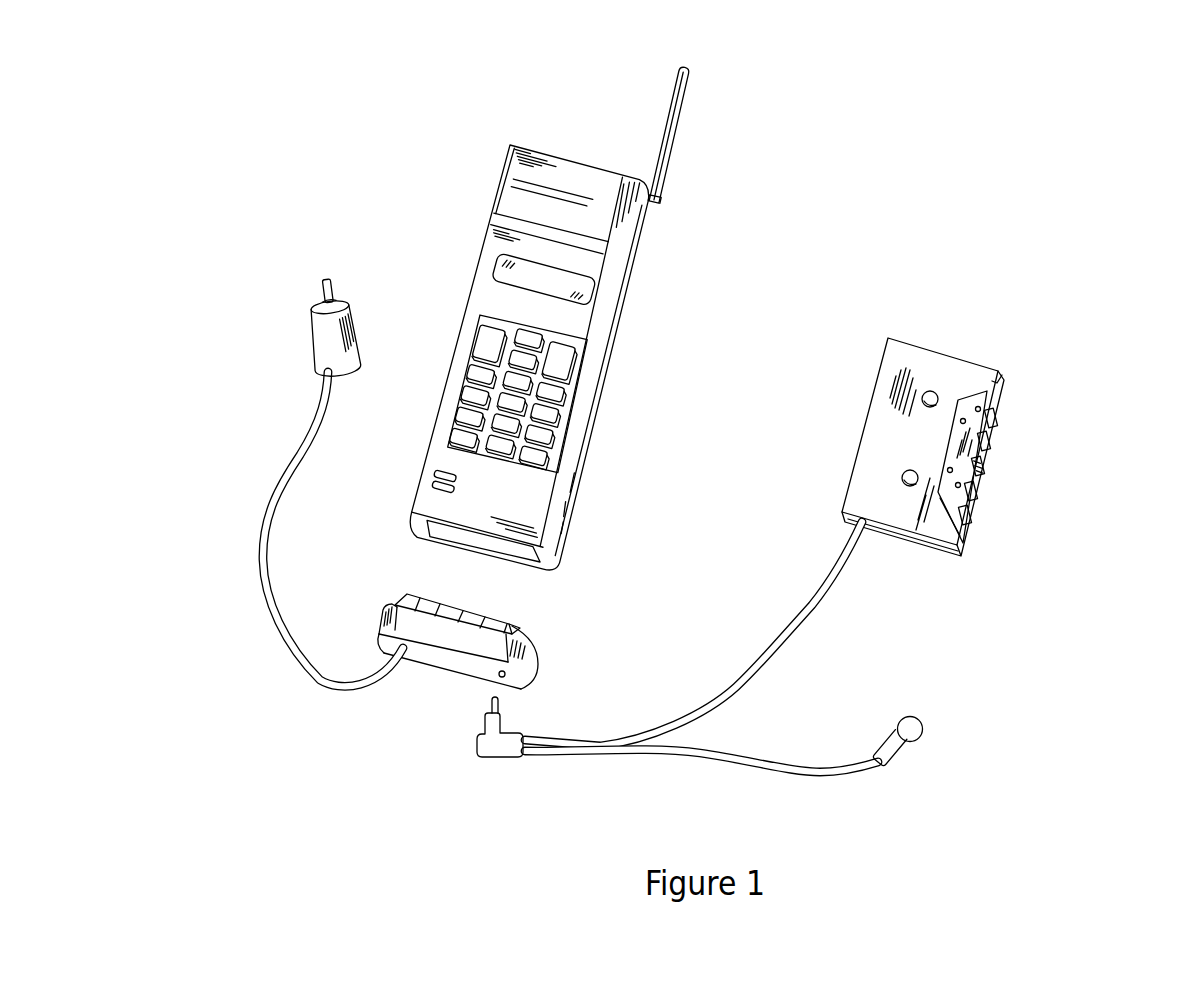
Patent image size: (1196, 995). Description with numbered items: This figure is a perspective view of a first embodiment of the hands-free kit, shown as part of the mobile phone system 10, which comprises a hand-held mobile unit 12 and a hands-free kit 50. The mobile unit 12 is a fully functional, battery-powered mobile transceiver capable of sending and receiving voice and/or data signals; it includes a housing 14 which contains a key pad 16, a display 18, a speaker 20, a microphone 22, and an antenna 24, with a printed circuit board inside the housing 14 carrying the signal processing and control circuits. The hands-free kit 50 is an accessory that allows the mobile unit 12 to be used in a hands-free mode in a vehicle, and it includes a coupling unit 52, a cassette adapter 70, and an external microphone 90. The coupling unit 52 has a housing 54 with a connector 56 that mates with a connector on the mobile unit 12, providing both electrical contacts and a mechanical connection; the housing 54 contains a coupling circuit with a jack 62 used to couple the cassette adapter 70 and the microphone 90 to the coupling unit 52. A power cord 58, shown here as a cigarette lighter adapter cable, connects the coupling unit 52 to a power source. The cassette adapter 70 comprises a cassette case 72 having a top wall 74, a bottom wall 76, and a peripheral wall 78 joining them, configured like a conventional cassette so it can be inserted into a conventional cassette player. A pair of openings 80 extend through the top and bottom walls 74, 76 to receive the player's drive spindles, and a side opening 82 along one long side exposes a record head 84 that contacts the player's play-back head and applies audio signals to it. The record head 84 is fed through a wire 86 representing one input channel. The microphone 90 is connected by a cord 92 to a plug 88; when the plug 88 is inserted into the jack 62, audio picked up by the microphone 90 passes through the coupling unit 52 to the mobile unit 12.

The mobile phone system 10 is at (844, 173).
The hand-held mobile unit 12 is at (548, 148).
The housing 14 is at (533, 360).
The key pad 16 is at (519, 393).
The display 18 is at (543, 279).
The speaker 20 is at (552, 193).
The microphone 22 is at (444, 481).
The antenna 24 is at (683, 117).
The hands-free kit 50 is at (1078, 609).
The coupling unit 52 is at (550, 660).
The housing 54 is at (443, 662).
The connector 56 is at (510, 623).
The power cord 58 is at (283, 627).
The jack 62 is at (513, 693).
The cassette adapter 70 is at (950, 346).
The cassette case 72 is at (847, 462).
The top wall 74 is at (875, 433).
The bottom wall 76 is at (932, 553).
The peripheral wall 78 is at (892, 543).
The openings 80 is at (903, 477).
The side opening 82 is at (983, 448).
The record head 84 is at (980, 473).
The wire 86 is at (763, 672).
The plug 88 is at (493, 750).
The external microphone 90 is at (922, 735).
The cord 92 is at (740, 772).